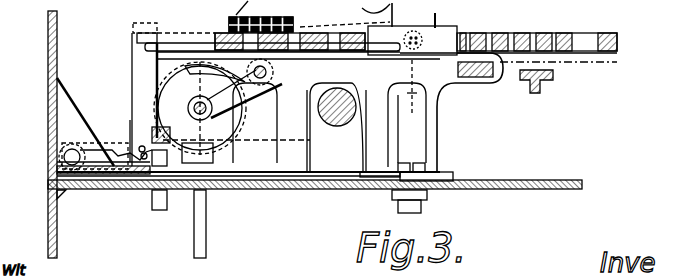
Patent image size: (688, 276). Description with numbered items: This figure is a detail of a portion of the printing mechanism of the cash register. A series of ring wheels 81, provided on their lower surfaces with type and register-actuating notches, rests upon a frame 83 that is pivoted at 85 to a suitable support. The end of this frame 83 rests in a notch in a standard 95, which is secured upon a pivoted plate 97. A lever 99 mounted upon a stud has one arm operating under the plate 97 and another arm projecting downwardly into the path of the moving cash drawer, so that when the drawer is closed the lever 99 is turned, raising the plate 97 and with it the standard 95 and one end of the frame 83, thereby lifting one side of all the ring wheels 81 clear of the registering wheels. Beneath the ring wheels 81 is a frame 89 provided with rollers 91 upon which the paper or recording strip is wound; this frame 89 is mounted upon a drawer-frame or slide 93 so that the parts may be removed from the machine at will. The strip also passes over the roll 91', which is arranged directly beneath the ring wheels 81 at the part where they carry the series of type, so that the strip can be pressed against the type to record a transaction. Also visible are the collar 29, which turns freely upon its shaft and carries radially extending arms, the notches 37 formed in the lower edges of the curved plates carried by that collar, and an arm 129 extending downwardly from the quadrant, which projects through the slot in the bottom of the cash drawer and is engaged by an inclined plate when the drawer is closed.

The collar 29 is at (431, 144).
The notches 37 is at (517, 88).
The ring wheels 81 is at (545, 36).
The frame 83 is at (180, 43).
The pivot 85 is at (430, 33).
The frame 89 is at (336, 116).
The rollers 91 is at (337, 125).
The roll 91' is at (414, 100).
The drawer-frame or slide 93 is at (61, 80).
The standard 95 is at (148, 66).
The pivoted plate 97 is at (112, 150).
The lever 99 is at (155, 198).
The arm 129 is at (207, 221).